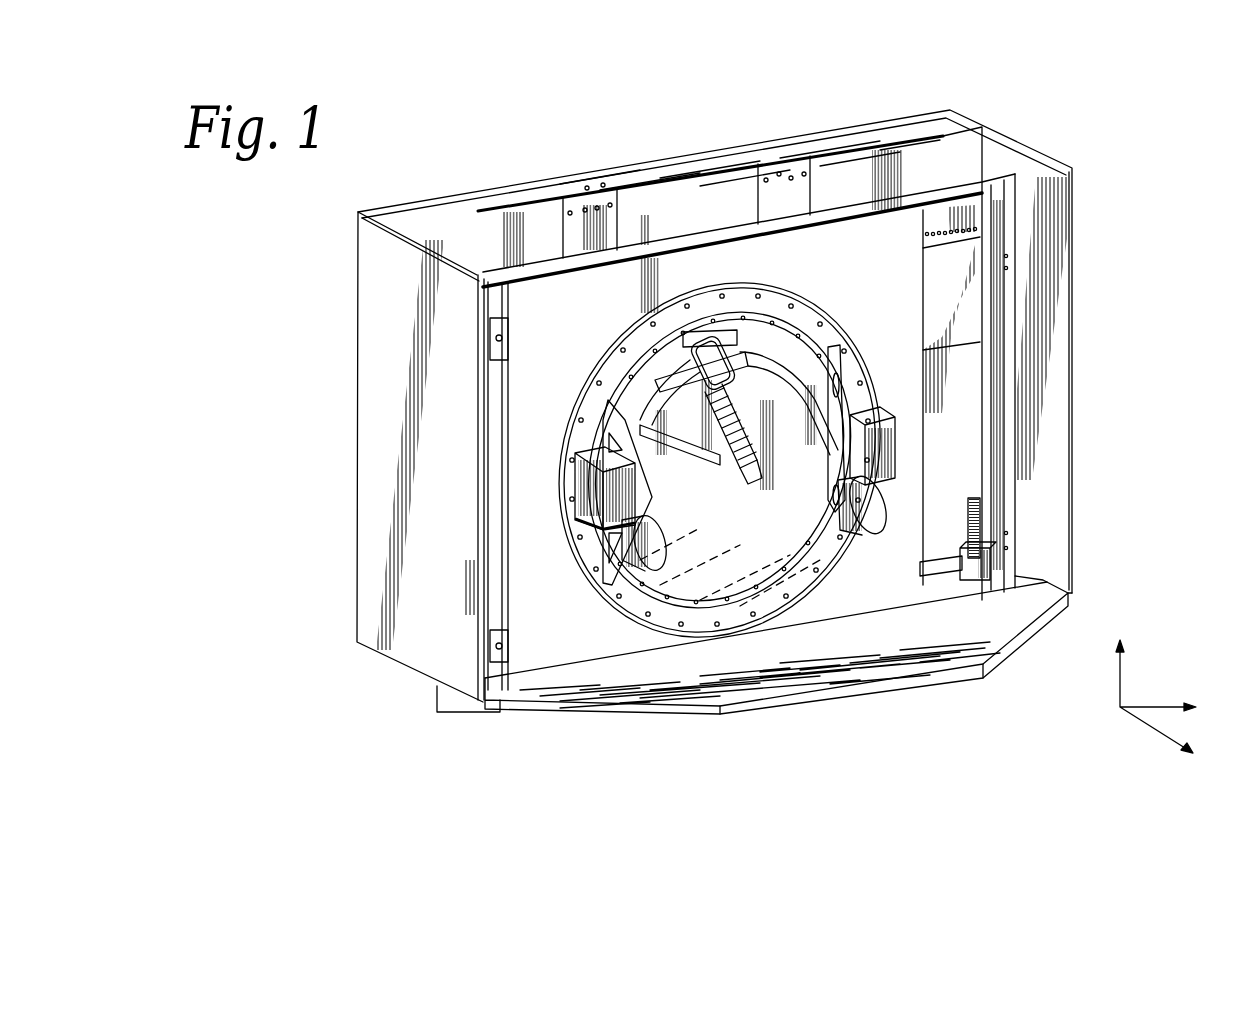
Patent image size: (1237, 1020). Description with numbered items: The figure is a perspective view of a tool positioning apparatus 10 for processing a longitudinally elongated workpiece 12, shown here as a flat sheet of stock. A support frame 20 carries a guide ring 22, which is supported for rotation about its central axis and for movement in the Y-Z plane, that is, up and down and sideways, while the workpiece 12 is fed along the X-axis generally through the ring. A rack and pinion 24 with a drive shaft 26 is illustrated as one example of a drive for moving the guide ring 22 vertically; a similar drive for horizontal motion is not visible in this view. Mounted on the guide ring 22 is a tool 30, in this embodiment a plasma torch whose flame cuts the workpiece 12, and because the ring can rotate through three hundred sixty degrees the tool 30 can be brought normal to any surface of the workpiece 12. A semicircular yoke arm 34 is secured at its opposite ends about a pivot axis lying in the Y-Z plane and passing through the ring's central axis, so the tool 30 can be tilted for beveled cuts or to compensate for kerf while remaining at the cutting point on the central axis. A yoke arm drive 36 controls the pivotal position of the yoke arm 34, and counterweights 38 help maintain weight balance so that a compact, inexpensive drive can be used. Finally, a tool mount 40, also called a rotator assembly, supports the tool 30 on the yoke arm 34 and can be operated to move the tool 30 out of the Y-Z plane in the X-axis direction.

The tool positioning apparatus 10 is at (1050, 104).
The workpiece 12 is at (693, 607).
The support frame 20 is at (437, 655).
The guide ring 22 is at (628, 572).
The rack and pinion 24 is at (992, 532).
The drive shaft 26 is at (950, 573).
The tool 30 is at (740, 480).
The yoke arm 34 is at (750, 352).
The yoke arm drive 36 is at (597, 490).
The counterweights 38 is at (628, 583).
The tool mount 40 is at (673, 357).